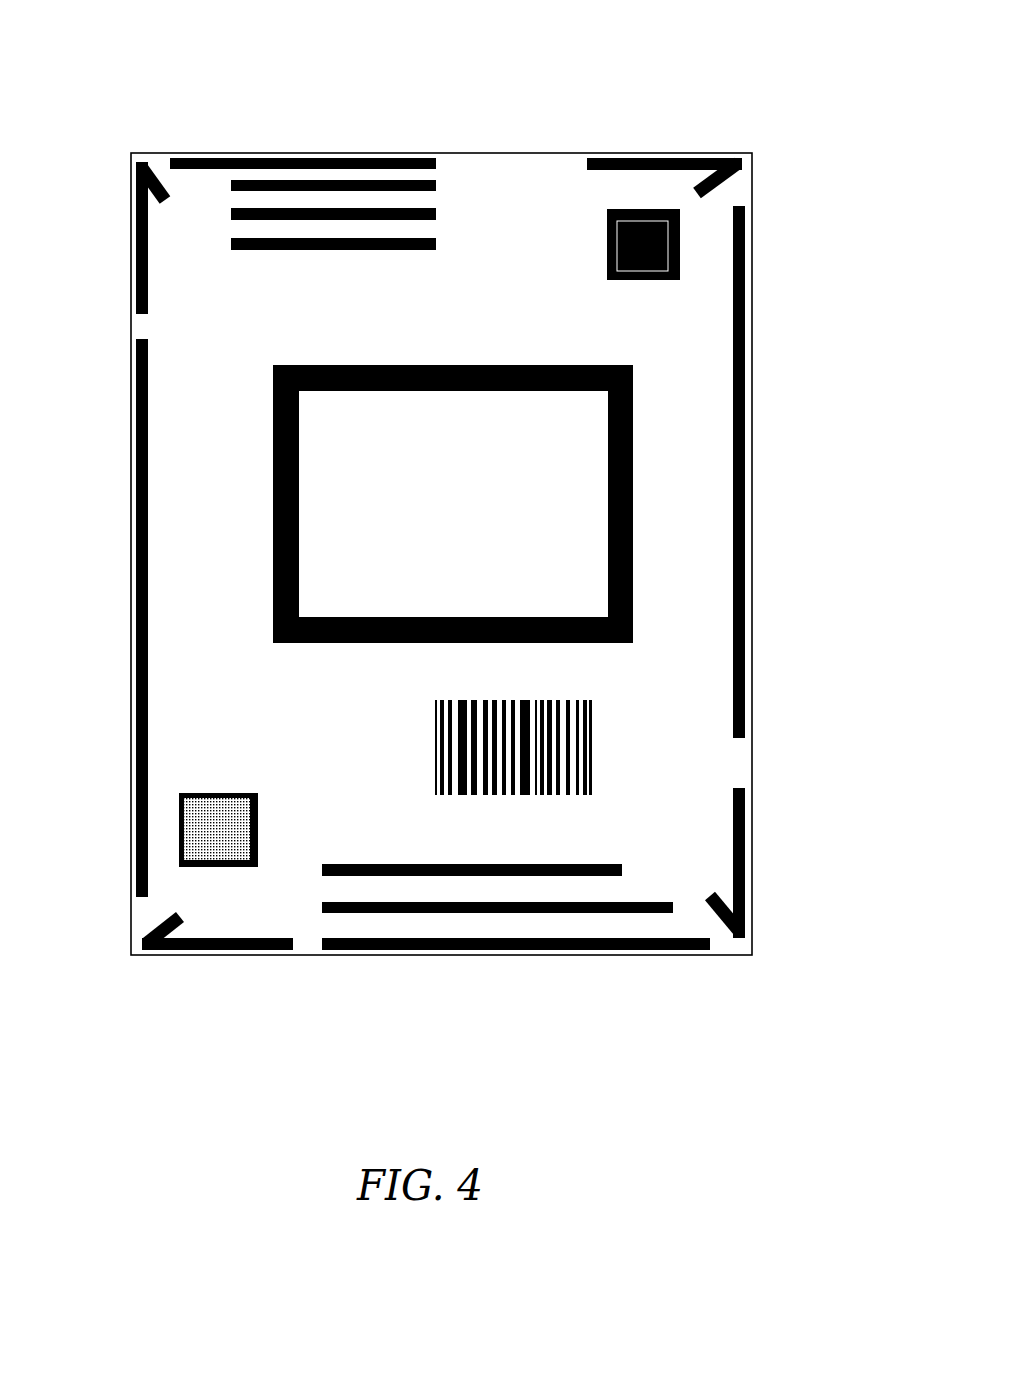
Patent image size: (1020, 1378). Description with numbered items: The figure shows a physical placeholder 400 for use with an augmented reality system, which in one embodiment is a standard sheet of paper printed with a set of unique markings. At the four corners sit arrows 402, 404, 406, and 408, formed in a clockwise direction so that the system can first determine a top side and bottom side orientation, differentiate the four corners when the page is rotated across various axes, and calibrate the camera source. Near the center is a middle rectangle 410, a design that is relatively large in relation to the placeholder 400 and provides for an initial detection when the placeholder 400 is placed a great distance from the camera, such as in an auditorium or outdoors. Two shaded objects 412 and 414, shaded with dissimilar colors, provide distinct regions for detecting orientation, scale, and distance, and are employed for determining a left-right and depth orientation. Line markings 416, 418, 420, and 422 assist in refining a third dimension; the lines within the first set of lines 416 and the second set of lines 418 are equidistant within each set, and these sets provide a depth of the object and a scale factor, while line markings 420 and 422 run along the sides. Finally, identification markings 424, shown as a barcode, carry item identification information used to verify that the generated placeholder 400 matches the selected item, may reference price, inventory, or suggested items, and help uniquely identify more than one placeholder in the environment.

The placeholder 400 is at (795, 113).
The arrow 402 is at (140, 193).
The arrow 404 is at (740, 160).
The arrow 406 is at (743, 895).
The arrow 408 is at (140, 943).
The middle rectangle 410 is at (633, 396).
The shaded object 412 is at (258, 798).
The shaded object 414 is at (608, 248).
The first set of lines 416 is at (335, 157).
The second set of lines 418 is at (378, 947).
The line marking 420 is at (140, 722).
The line marking 422 is at (745, 465).
The identification markings 424 is at (588, 733).